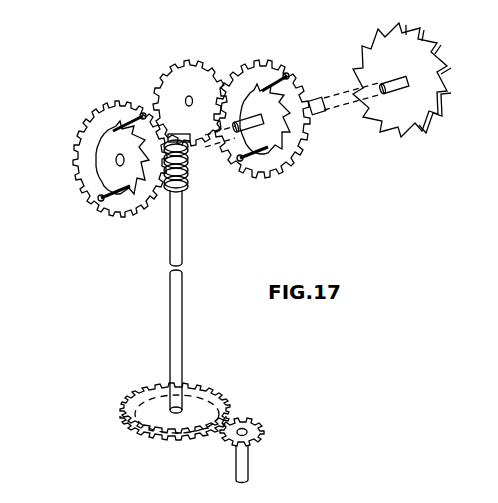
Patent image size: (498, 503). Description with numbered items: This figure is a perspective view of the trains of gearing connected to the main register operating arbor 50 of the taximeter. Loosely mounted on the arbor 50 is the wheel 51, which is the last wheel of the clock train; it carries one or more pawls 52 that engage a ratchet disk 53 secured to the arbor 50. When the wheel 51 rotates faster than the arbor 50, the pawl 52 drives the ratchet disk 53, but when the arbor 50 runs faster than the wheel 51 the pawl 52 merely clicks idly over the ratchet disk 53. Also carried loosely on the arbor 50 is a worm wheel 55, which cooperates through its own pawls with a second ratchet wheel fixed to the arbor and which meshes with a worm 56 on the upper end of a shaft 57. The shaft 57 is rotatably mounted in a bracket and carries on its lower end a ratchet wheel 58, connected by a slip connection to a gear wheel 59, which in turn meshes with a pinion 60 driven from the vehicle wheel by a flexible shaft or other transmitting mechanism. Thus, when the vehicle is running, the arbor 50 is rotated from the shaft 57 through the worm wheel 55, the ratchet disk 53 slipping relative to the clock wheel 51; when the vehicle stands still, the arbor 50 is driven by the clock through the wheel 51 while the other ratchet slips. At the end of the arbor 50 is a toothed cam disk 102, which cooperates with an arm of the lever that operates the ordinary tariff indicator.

The meter operating arbor 50 is at (320, 112).
The wheel 51 is at (292, 92).
The pawl 52 is at (270, 88).
The ratchet disk 53 is at (265, 133).
The worm wheel 55 is at (83, 142).
The worm 56 is at (187, 183).
The shaft 57 is at (182, 252).
The ratchet wheel 58 is at (150, 428).
The gear wheel 59 is at (212, 397).
The pinion 60 is at (262, 431).
The toothed cam disk 102 is at (406, 124).